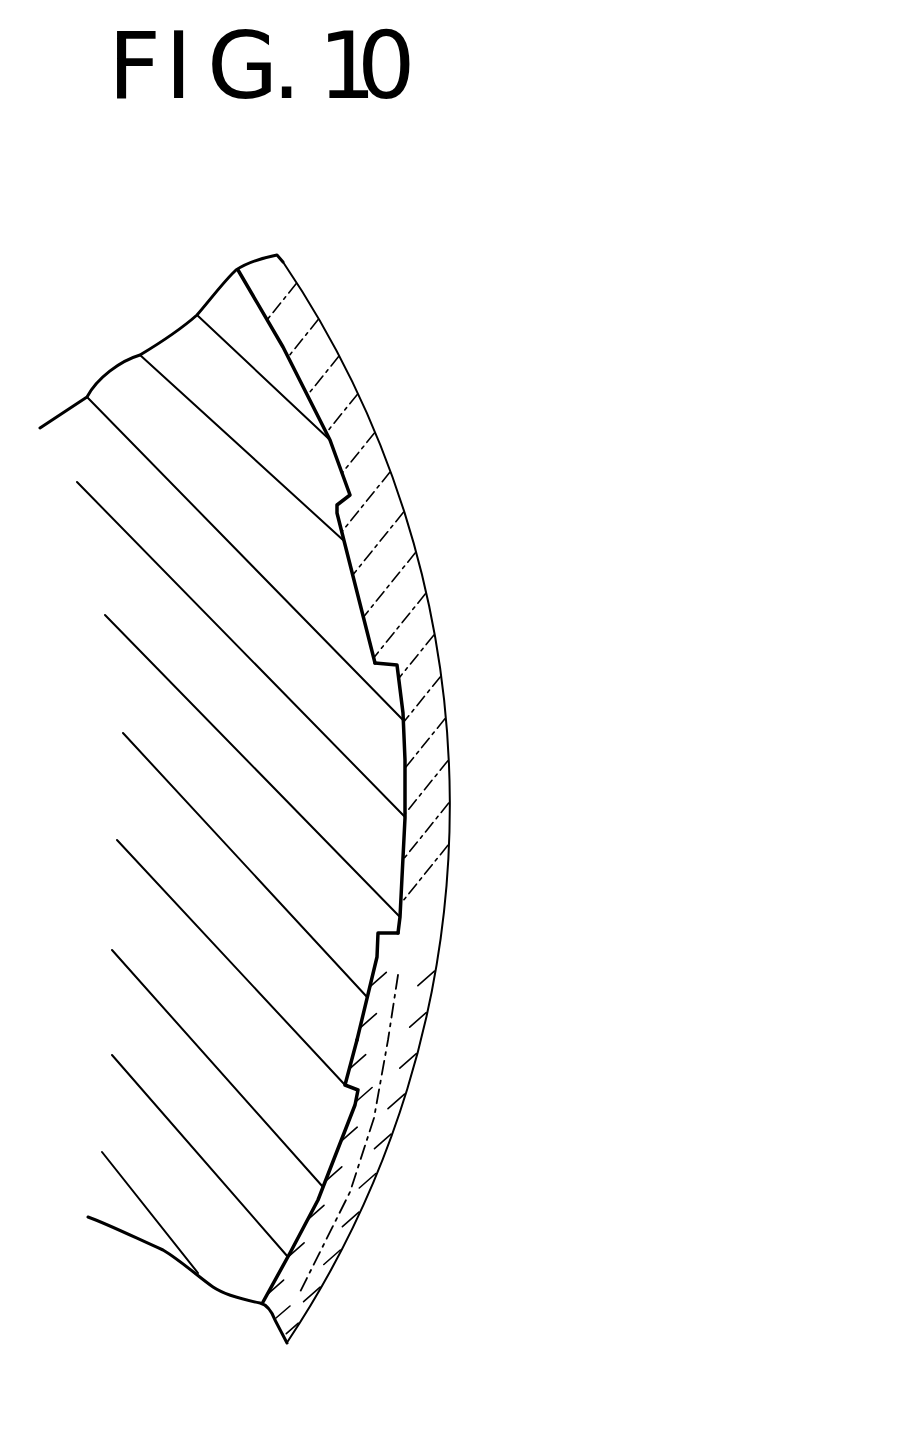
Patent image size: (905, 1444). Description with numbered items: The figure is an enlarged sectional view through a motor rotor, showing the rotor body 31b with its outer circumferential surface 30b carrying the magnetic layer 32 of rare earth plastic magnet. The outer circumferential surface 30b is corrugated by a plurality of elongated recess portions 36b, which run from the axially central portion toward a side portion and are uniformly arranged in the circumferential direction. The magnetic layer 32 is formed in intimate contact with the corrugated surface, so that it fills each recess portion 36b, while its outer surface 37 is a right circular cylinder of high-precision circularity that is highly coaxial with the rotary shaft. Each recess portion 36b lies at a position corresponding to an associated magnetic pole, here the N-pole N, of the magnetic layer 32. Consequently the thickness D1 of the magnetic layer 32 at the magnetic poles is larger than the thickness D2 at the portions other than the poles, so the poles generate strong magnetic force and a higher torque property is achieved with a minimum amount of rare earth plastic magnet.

The outer surface 37 is at (373, 423).
The magnetic layer 32 is at (377, 1123).
The recess portion 36b is at (368, 622).
The outer circumferential surface 30b is at (407, 825).
The rotor body 31b is at (307, 1155).
The thickness at the magnetic poles D1 is at (270, 548).
The thickness at portions other than the magnetic poles D2 is at (327, 745).
The N-pole N is at (290, 597).